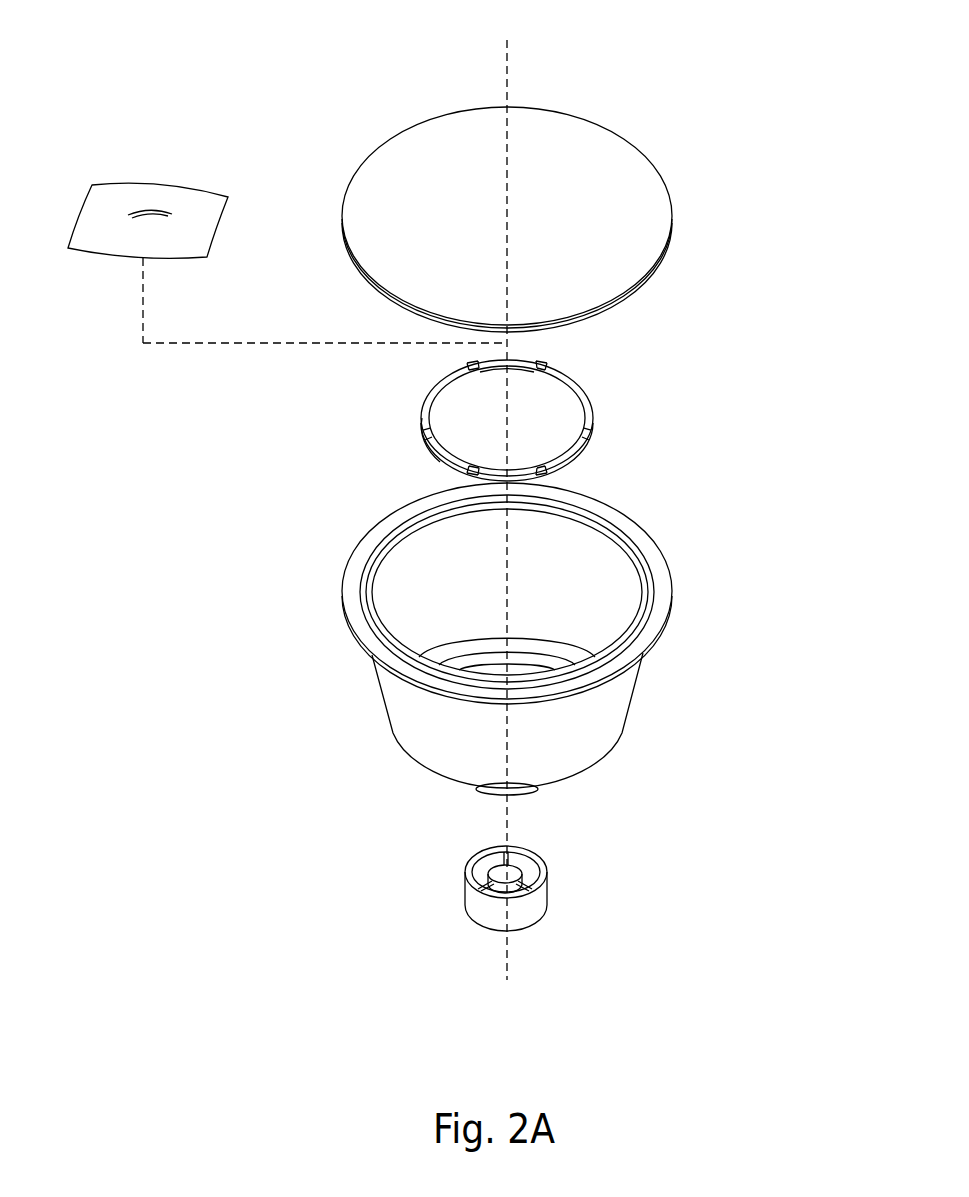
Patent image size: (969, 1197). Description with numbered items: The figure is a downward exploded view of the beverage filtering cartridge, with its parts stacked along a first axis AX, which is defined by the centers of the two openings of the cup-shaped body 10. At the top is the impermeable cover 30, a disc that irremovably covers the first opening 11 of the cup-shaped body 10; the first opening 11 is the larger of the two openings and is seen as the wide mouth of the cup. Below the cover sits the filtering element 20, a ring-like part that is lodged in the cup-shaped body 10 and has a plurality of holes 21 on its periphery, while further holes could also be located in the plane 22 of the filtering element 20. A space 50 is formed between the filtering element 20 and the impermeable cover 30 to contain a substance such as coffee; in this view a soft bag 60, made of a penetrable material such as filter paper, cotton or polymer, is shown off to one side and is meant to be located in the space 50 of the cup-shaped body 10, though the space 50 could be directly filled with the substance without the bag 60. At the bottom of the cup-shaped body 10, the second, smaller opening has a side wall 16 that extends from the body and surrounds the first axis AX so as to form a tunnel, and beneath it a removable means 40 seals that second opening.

The cup-shaped body 10 is at (534, 642).
The first opening 11 is at (582, 592).
The side wall 16 is at (477, 789).
The filtering element 20 is at (538, 399).
The holes 21 is at (435, 445).
The plane 22 is at (532, 406).
The impermeable cover 30 is at (677, 223).
The removable means 40 is at (547, 892).
The space 50 is at (550, 348).
The bag 60 is at (160, 184).
The first axis AX is at (506, 62).